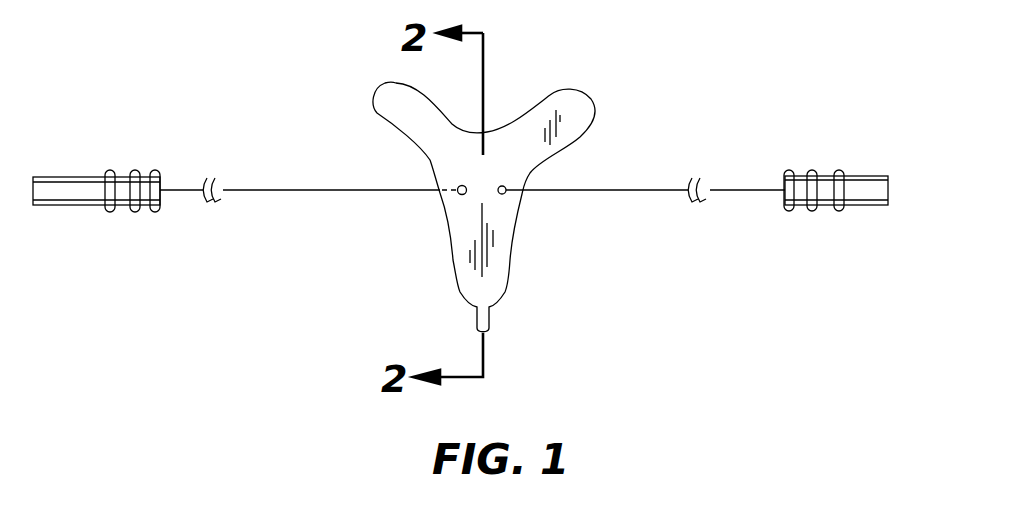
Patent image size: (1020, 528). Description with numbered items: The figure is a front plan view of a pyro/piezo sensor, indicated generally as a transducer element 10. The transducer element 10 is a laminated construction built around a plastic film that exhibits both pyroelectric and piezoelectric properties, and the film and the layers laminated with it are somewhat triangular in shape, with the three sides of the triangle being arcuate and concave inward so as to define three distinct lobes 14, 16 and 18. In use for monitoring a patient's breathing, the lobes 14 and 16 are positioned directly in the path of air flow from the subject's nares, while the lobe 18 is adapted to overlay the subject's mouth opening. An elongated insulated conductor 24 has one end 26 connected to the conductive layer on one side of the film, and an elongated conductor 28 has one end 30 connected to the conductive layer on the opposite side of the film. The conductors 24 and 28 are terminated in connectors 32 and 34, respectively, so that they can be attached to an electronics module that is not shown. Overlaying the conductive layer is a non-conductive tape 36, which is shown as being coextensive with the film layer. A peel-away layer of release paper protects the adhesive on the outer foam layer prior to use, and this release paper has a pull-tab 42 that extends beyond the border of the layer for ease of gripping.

The transducer element 10 is at (540, 174).
The lobe 14 is at (589, 97).
The lobe 16 is at (373, 95).
The lobe 18 is at (500, 303).
The elongated insulated conductor 24 is at (655, 189).
The end of conductor 26 is at (504, 194).
The elongated conductor 28 is at (312, 191).
The end of conductor 30 is at (443, 184).
The connector 32 is at (863, 174).
The connector 34 is at (77, 177).
The non-conductive tape 36 is at (517, 138).
The pull-tab 42 is at (477, 328).